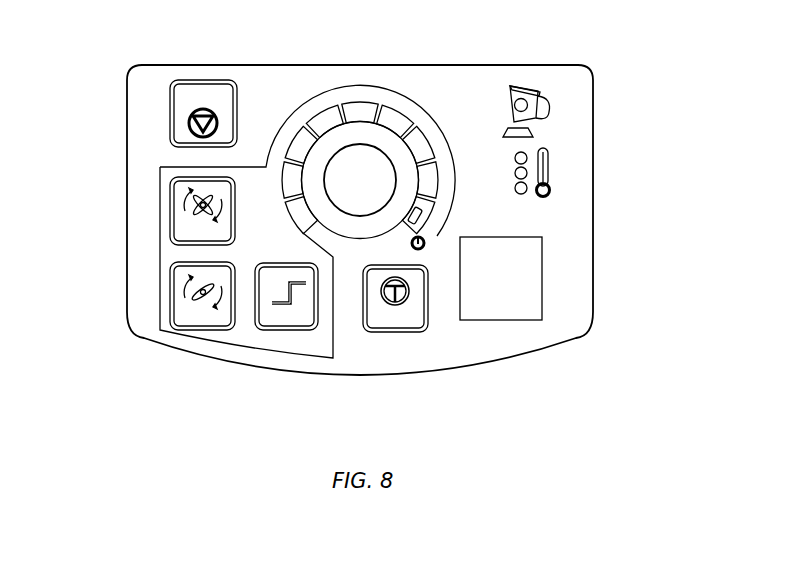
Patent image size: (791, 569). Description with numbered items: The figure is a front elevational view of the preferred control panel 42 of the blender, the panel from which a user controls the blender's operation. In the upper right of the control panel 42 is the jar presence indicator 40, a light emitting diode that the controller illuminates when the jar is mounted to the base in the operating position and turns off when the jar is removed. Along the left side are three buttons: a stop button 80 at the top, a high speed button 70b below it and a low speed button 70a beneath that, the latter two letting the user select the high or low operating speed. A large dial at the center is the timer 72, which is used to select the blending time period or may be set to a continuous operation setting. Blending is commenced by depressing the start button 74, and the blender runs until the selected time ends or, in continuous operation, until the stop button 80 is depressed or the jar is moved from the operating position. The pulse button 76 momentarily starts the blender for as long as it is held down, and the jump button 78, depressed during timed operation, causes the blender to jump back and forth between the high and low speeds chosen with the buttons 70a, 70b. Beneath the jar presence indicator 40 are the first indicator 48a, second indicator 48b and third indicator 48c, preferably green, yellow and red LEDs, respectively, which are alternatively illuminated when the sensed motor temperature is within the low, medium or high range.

The control panel 42 is at (128, 340).
The stop button 80 is at (170, 115).
The high speed button 70b is at (170, 208).
The low speed button 70a is at (170, 297).
The jump button 78 is at (288, 332).
The pulse button 76 is at (397, 332).
The start button 74 is at (527, 279).
The timer 72 is at (360, 155).
The jar presence indicator 40 is at (557, 121).
The first indicator 48a is at (551, 188).
The second indicator 48b is at (527, 173).
The third indicator 48c is at (527, 157).